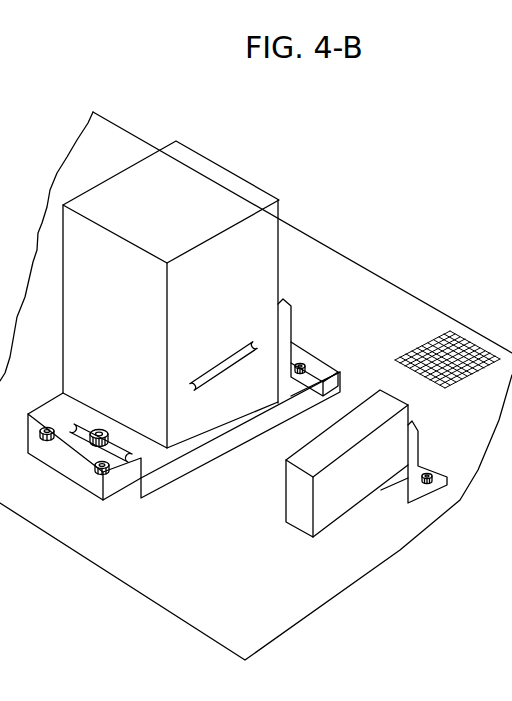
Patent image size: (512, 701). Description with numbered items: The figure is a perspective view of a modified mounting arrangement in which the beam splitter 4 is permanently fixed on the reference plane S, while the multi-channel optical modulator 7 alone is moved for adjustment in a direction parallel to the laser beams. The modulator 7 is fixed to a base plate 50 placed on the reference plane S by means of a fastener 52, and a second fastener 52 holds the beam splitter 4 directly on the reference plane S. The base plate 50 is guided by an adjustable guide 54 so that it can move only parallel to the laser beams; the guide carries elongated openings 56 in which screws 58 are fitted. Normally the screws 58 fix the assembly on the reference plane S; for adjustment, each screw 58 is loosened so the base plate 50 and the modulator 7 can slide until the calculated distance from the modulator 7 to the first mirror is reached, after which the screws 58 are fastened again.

The multi-channel optical modulator 7 is at (217, 178).
The beam splitter 4 is at (342, 503).
The base plate 50 is at (192, 464).
The fastener 52 is at (289, 322).
The adjustable guide 54 is at (86, 474).
The elongated openings 56 is at (126, 462).
The screws 58 is at (69, 453).
The reference plane S is at (447, 359).